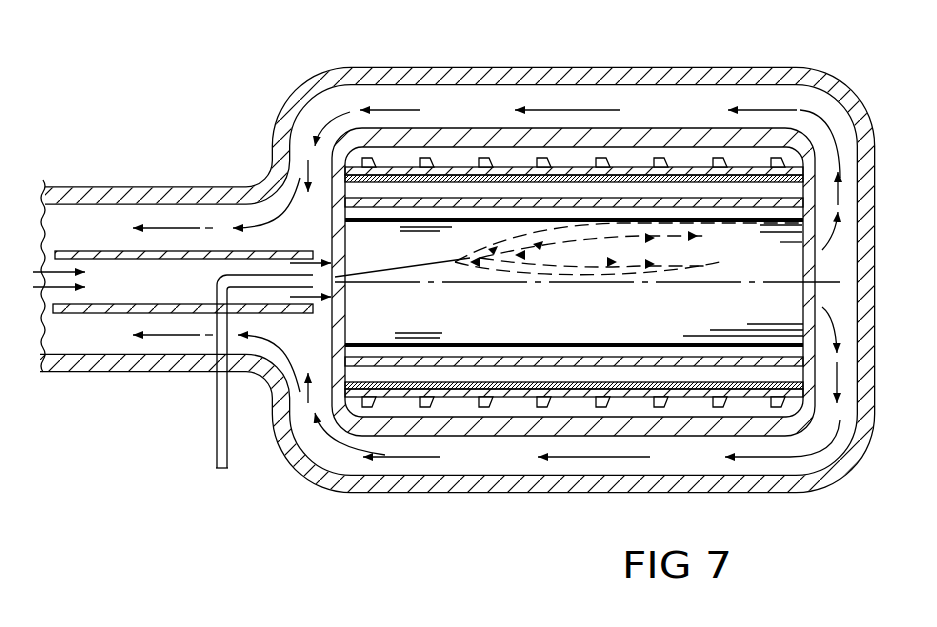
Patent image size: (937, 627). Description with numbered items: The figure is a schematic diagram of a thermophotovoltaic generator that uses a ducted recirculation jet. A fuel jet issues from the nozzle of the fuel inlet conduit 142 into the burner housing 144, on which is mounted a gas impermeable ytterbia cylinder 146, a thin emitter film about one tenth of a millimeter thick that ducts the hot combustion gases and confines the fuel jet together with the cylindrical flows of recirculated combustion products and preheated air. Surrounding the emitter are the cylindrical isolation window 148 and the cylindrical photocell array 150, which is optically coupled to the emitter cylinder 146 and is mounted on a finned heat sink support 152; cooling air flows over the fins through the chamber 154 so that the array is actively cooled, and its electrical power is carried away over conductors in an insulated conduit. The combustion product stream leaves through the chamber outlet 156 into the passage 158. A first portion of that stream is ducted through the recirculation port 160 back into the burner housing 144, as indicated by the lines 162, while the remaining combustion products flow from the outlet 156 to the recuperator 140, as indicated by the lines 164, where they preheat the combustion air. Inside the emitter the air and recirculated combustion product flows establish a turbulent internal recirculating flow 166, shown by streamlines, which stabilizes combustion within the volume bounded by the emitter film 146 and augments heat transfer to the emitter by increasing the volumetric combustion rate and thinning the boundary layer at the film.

The recuperator 140 is at (150, 372).
The fuel inlet conduit 142 is at (322, 284).
The burner housing 144 is at (460, 310).
The gas impermeable ytterbia cylinder 146 is at (474, 343).
The cylindrical isolation window 148 is at (545, 348).
The cylindrical photocell array 150 is at (629, 385).
The finned heat sink support 152 is at (780, 166).
The chamber 154 is at (481, 152).
The chamber outlet 156 is at (276, 184).
The passage 158 is at (173, 217).
The recirculation port 160 is at (337, 216).
The lines indicating recirculated combustion product flow 162 is at (331, 242).
The lines indicating combustion product flow to recuperator 164 is at (262, 228).
The turbulent internal recirculating flow 166 is at (680, 250).